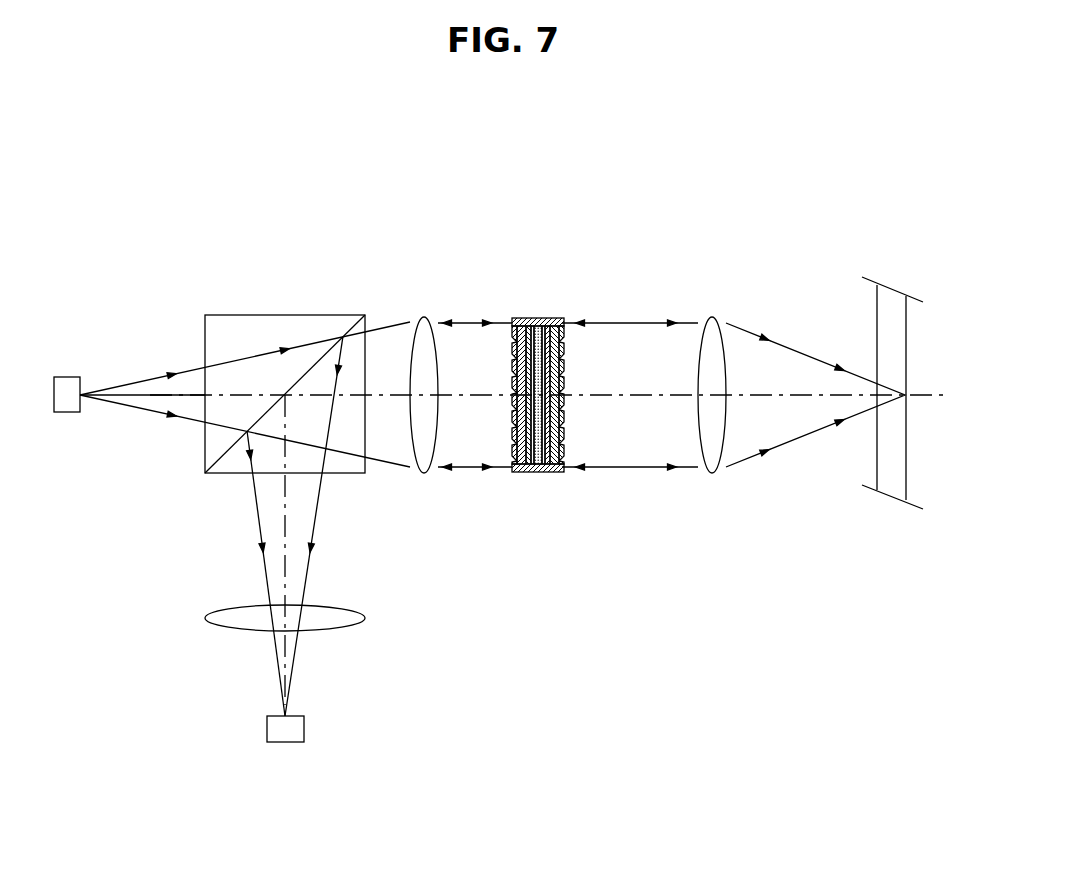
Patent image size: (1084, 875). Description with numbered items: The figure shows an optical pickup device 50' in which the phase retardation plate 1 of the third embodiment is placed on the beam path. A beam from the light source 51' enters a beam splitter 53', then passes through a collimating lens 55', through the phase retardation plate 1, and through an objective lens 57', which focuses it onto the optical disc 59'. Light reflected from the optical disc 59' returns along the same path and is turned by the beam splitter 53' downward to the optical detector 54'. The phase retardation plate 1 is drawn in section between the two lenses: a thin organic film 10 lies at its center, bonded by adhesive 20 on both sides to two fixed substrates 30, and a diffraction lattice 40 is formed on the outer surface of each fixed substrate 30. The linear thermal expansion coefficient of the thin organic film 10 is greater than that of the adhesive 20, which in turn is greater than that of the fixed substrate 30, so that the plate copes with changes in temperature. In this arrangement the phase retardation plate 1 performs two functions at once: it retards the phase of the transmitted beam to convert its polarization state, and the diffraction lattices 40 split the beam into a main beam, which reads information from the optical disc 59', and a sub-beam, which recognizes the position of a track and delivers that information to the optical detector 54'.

The phase retardation plate 1 is at (549, 232).
The thin organic film 10 is at (537, 320).
The adhesive 20 is at (530, 320).
The fixed substrate 30 is at (524, 320).
The diffraction lattice 40 is at (515, 320).
The optical pickup device 50' is at (487, 468).
The light source 51' is at (66, 441).
The beam splitter 53' is at (292, 442).
The optical detector 54' is at (331, 728).
The collimating lens 55' is at (424, 441).
The objective lens 57' is at (711, 441).
The optical disc 59' is at (892, 426).